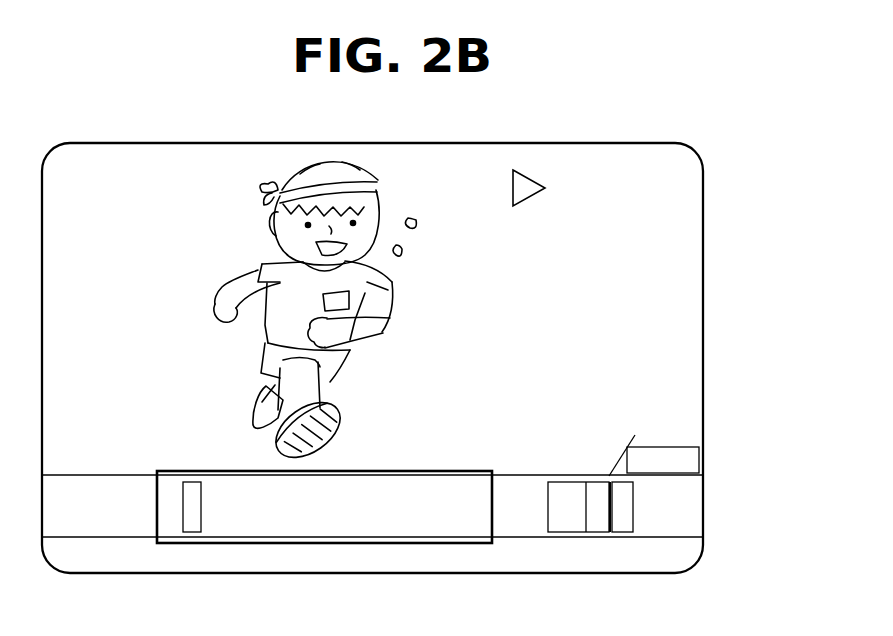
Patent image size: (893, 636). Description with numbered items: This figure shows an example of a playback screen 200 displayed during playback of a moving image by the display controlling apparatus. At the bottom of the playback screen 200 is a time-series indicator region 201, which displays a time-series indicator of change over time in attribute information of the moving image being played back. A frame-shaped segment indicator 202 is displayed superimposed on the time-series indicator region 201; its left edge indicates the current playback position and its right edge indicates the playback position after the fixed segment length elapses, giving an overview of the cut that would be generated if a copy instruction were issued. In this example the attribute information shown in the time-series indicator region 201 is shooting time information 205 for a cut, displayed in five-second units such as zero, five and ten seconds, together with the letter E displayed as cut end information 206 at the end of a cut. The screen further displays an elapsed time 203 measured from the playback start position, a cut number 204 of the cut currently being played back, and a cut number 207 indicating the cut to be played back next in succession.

The playback screen 200 is at (93, 143).
The time-series indicator region 201 is at (87, 492).
The segment indicator 202 is at (464, 471).
The elapsed time 203 is at (693, 190).
The cut number 204 is at (693, 237).
The shooting time information 205 is at (188, 482).
The cut end information 206 is at (597, 532).
The cut number 207 is at (688, 447).